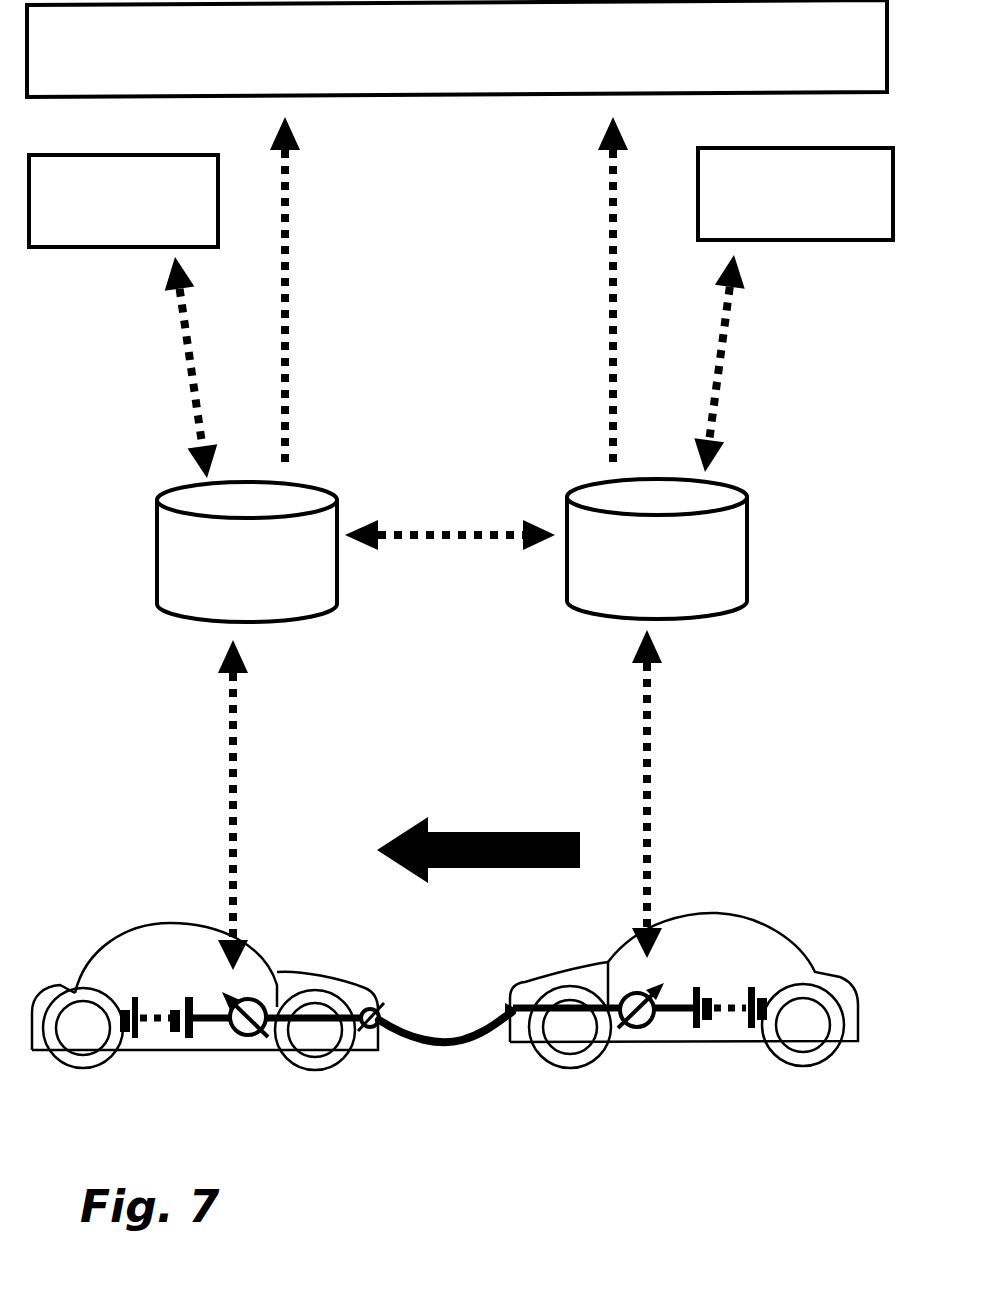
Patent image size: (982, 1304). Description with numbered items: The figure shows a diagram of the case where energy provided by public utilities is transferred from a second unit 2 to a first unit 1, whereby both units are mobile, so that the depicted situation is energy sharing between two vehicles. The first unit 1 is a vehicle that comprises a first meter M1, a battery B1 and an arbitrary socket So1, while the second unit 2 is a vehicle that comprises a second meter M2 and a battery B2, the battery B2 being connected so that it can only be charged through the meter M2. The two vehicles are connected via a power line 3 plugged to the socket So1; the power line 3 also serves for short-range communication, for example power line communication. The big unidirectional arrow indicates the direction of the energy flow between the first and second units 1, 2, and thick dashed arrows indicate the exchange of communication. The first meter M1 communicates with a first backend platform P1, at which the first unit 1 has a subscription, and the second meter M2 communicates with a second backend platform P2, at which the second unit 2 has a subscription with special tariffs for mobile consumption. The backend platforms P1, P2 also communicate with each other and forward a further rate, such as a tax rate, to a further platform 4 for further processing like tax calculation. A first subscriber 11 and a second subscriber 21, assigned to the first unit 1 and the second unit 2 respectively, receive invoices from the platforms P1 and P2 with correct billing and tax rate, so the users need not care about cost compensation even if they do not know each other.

The further platform 4 is at (441, 66).
The first subscriber 11 is at (92, 217).
The second subscriber 21 is at (768, 204).
The first backend platform P1 is at (212, 582).
The second backend platform P2 is at (620, 580).
The first unit 1 is at (138, 912).
The second unit 2 is at (767, 895).
The power line 3 is at (447, 1047).
The socket So1 is at (390, 1012).
The battery B1 is at (151, 1052).
The first meter M1 is at (241, 1035).
The battery B2 is at (724, 1030).
The second meter M2 is at (633, 1028).